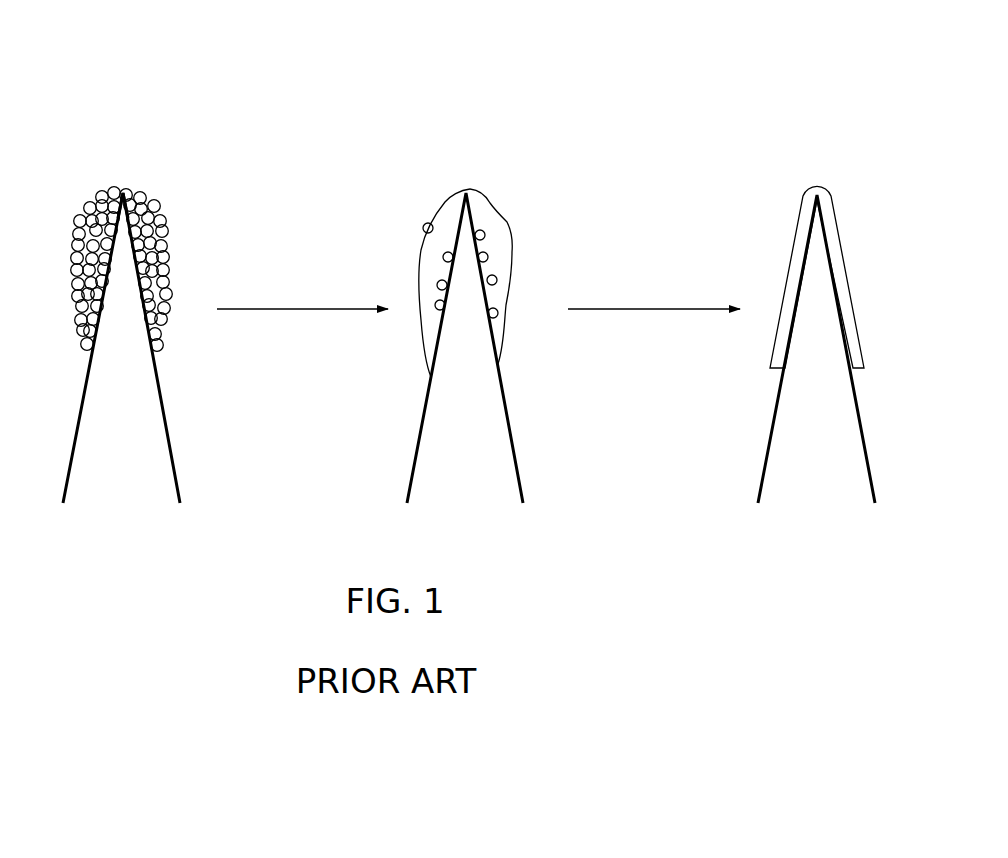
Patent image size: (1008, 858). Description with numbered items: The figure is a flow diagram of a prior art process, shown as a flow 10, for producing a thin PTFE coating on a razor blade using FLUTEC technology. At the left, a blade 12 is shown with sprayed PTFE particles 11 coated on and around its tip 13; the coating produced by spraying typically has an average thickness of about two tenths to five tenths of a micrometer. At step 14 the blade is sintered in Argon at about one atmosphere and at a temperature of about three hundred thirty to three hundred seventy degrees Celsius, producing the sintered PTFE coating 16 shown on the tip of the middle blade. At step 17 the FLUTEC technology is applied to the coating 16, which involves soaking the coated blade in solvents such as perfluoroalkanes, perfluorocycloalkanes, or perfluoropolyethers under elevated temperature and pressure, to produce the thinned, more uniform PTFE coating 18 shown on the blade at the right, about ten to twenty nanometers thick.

The flow 10 is at (713, 84).
The sprayed PTFE particles 11 is at (95, 196).
The blade 12 is at (86, 435).
The tip 13 is at (126, 189).
The sintering step 14 is at (302, 326).
The sintered PTFE coating 16 is at (445, 201).
The FLUTEC step 17 is at (654, 326).
The thinned PTFE coating 18 is at (800, 200).